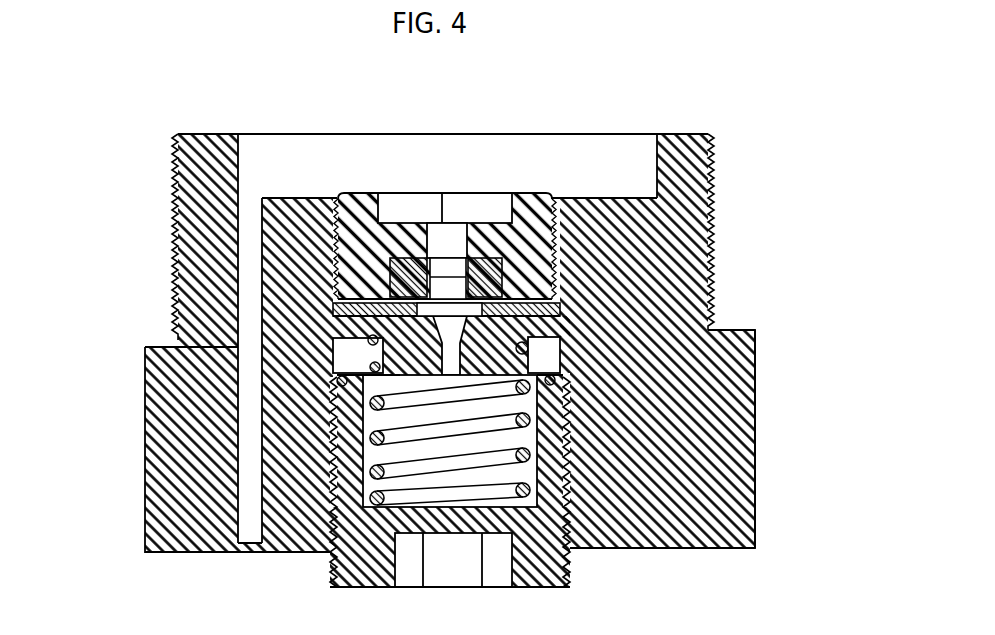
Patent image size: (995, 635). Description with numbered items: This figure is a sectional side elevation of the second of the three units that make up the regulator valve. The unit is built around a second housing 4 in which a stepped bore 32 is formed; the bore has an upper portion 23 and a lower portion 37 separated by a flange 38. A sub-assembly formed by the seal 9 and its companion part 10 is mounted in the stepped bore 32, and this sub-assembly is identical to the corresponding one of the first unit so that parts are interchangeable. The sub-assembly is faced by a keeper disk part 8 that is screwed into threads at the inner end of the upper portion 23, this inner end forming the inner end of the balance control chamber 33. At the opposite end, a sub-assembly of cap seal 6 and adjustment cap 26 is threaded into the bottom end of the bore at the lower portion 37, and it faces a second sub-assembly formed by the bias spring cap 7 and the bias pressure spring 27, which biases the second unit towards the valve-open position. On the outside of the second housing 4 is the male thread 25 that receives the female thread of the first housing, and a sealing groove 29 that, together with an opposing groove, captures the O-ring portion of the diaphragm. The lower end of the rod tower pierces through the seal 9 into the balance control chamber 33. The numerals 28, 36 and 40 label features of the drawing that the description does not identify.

The second housing 4 is at (717, 448).
The cap seal 6 is at (550, 381).
The bias spring cap 7 is at (342, 381).
The keeper disk part 8 is at (500, 292).
The seal 9 is at (505, 270).
The sub-assembly part 10 is at (527, 238).
The upper portion 23 is at (313, 253).
The male thread 25 is at (183, 302).
The adjustment cap 26 is at (556, 411).
The bias pressure spring 27 is at (400, 373).
The fluid passage 28 is at (255, 520).
The sealing groove 29 is at (682, 133).
The stepped bore 32 is at (760, 542).
The balance control chamber 33 is at (350, 353).
The cartridge head 36 is at (557, 212).
The lower portion 37 is at (758, 497).
The flange 38 is at (540, 326).
The spring 40 is at (527, 476).